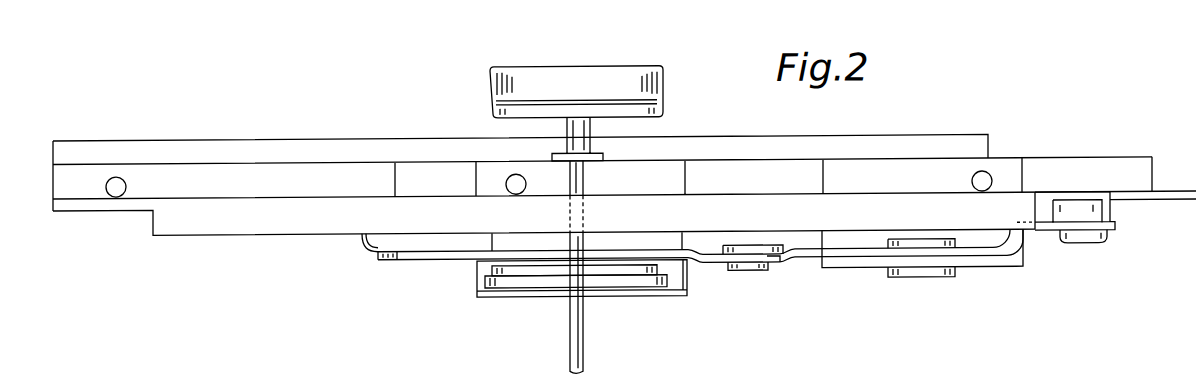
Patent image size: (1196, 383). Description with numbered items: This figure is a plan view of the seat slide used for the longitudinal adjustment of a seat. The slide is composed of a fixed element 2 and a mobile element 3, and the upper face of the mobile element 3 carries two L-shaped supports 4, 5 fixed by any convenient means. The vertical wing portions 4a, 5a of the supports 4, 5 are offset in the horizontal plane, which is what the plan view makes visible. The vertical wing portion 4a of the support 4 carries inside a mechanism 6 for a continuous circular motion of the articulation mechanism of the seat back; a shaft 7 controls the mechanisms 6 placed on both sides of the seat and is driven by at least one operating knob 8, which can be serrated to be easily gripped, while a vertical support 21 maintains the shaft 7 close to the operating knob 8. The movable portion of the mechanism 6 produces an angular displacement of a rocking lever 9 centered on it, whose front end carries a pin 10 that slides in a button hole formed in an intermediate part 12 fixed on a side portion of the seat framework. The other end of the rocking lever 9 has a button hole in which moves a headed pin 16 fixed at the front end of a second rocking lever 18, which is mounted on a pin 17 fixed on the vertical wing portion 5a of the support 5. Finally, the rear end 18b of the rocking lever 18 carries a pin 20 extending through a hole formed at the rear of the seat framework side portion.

The fixed element 2 is at (945, 152).
The mobile element 3 is at (1120, 175).
The L-shaped support 4 is at (657, 178).
The vertical wing portion 4a is at (490, 301).
The L-shaped support 5 is at (1006, 165).
The vertical wing portion 5a is at (848, 270).
The mechanism 6 is at (540, 284).
The shaft 7 is at (568, 186).
The operating knob 8 is at (520, 84).
The rocking lever 9 is at (613, 262).
The pin 10 is at (410, 268).
The intermediate part 12 is at (377, 247).
The pin 16 is at (752, 277).
The pin 17 is at (930, 278).
The second rocking lever 18 is at (905, 258).
The rear end 18b is at (1050, 239).
The pin 20 is at (1095, 249).
The vertical support 21 is at (552, 160).